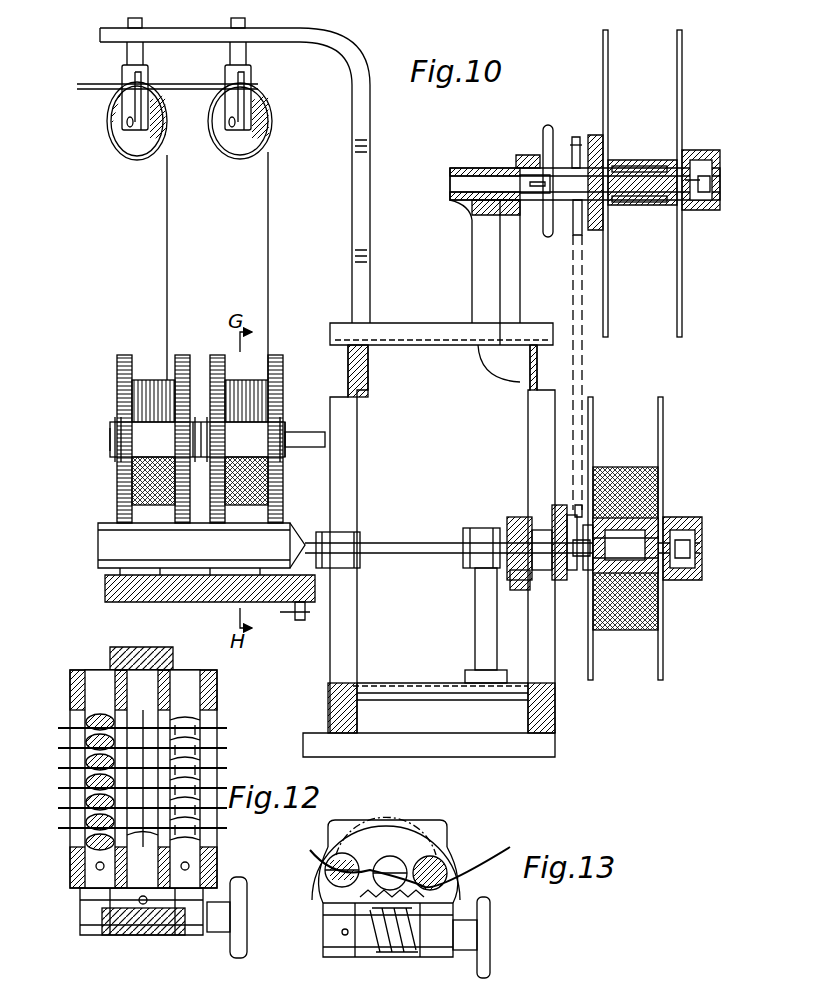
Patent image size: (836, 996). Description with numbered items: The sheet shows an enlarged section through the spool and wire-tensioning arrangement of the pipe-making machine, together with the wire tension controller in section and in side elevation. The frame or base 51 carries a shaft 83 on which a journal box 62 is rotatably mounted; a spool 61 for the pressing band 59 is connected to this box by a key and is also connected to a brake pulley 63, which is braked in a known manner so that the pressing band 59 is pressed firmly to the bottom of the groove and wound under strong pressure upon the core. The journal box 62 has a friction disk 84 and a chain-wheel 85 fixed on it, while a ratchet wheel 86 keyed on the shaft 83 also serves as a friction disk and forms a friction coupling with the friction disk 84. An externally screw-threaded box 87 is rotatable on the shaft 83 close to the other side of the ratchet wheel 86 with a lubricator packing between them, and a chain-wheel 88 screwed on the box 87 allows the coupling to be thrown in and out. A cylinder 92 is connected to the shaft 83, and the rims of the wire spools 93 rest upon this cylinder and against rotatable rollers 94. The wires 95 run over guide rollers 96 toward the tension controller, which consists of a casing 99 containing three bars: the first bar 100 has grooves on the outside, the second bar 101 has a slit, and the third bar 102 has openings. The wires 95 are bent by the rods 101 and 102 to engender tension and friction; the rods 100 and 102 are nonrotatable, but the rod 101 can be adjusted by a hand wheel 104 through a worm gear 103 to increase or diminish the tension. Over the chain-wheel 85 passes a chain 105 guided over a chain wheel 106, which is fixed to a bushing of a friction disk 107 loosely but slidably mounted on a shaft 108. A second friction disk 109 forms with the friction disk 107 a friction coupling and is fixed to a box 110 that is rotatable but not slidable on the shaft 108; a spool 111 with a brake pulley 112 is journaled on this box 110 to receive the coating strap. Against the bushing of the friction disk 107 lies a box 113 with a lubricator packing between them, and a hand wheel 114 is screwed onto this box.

In FIG. 10, the base frame 51 is at (528, 717).
In FIG. 10, the pressing band 59 is at (626, 630).
In FIG. 10, the spool 61 is at (658, 418).
In FIG. 10, the journal box 62 is at (588, 575).
In FIG. 10, the brake pulley 63 is at (677, 517).
In FIG. 10, the shaft 83 is at (402, 544).
In FIG. 10, the friction disk 84 is at (560, 582).
In FIG. 10, the chain-wheel 85 is at (577, 510).
In FIG. 10, the ratchet wheel 86 is at (560, 512).
In FIG. 10, the box 87 is at (540, 588).
In FIG. 10, the chain-wheel 88 is at (520, 508).
In FIG. 10, the cylinder 92 is at (206, 571).
In FIG. 10, the wire spools 93 is at (124, 356).
In FIG. 10, the rotatable rollers 94 is at (217, 439).
In FIG. 10, the wires 95 is at (167, 268).
In FIG. 12, the wires 95 is at (58, 788).
In FIG. 13, the wires 95 is at (312, 855).
In FIG. 10, the guide rollers 96 is at (125, 150).
In FIG. 12, the casing 99 is at (112, 660).
In FIG. 13, the casing 99 is at (348, 830).
In FIG. 12, the first bar 100 is at (200, 740).
In FIG. 13, the first bar 100 is at (433, 858).
In FIG. 12, the second bar 101 is at (147, 742).
In FIG. 13, the second bar 101 is at (390, 858).
In FIG. 12, the third bar 102 is at (85, 738).
In FIG. 13, the third bar 102 is at (337, 855).
In FIG. 12, the worm gear 103 is at (142, 938).
In FIG. 13, the worm gear 103 is at (378, 950).
In FIG. 12, the hand wheel 104 is at (242, 920).
In FIG. 13, the hand wheel 104 is at (490, 922).
In FIG. 10, the chain 105 is at (584, 372).
In FIG. 10, the chain wheel 106 is at (577, 137).
In FIG. 10, the friction disk 107 is at (587, 228).
In FIG. 10, the shaft 108 is at (632, 190).
In FIG. 10, the second friction disk 109 is at (600, 215).
In FIG. 10, the box 110 is at (636, 166).
In FIG. 10, the spool 111 is at (620, 162).
In FIG. 10, the brake pulley 112 is at (694, 152).
In FIG. 10, the box 113 is at (545, 212).
In FIG. 10, the hand wheel 114 is at (542, 145).